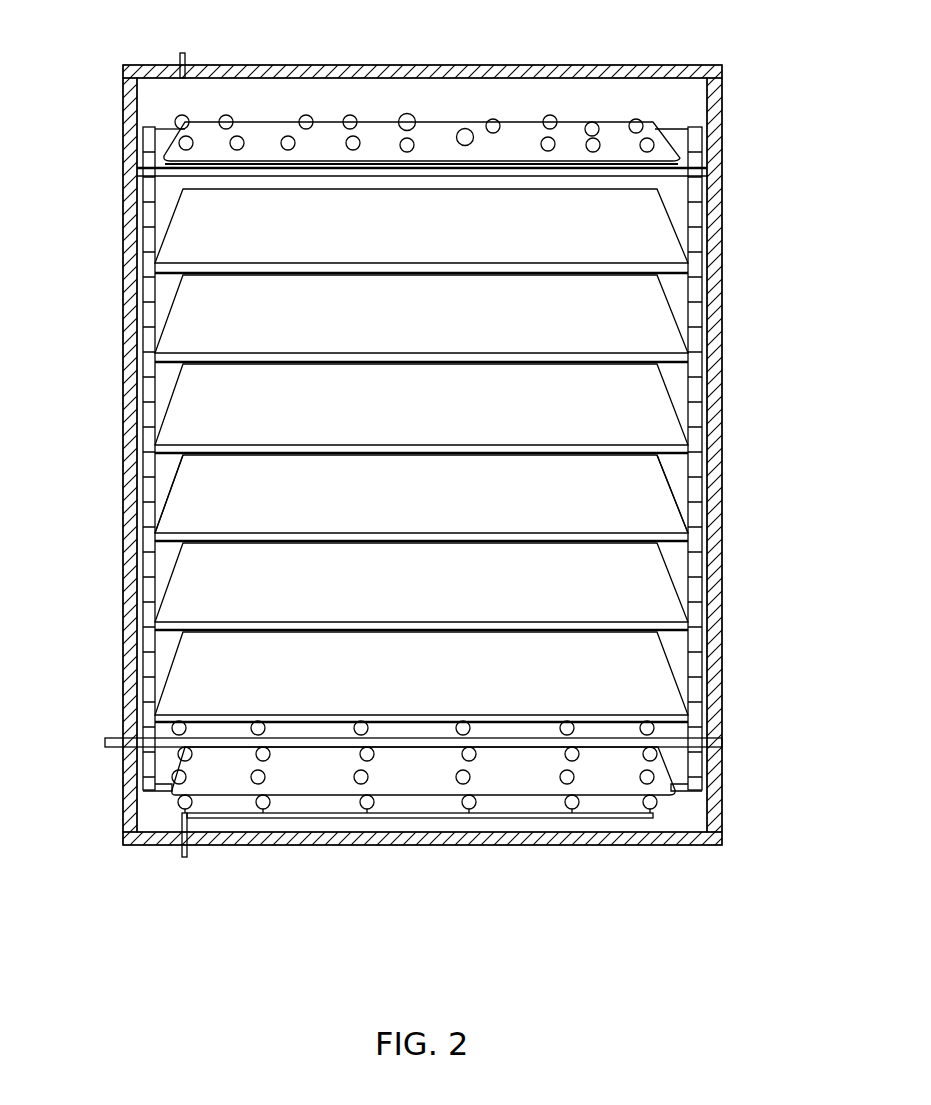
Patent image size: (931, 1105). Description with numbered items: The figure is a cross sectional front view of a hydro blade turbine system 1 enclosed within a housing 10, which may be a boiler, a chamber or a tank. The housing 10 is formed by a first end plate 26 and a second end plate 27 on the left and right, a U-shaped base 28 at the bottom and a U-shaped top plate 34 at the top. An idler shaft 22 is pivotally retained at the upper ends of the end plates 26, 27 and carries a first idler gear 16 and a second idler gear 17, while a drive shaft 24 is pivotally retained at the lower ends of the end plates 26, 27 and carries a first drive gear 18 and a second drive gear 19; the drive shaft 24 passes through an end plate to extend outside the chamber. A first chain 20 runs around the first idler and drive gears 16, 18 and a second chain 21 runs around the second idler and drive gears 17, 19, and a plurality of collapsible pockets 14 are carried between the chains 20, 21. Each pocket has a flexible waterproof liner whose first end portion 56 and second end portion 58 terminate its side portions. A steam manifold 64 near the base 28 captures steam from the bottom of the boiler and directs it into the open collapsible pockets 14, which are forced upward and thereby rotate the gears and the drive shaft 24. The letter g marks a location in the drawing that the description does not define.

The hydro blade turbine system 1 is at (586, 870).
The housing 10 is at (124, 478).
The collapsible pockets 14 is at (655, 317).
The first idler gear 16 is at (143, 144).
The second idler gear 17 is at (697, 147).
The first drive gear 18 is at (145, 772).
The second drive gear 19 is at (705, 757).
The first chain 20 is at (147, 592).
The second chain 21 is at (700, 493).
The idler shaft 22 is at (712, 187).
The drive shaft 24 is at (118, 736).
The first end plate 26 is at (124, 320).
The second end plate 27 is at (717, 398).
The U-shaped base 28 is at (287, 845).
The U-shaped top plate 34 is at (480, 65).
The first end portion 56 is at (165, 507).
The second end portion 58 is at (668, 478).
The steam manifold 64 is at (228, 818).
The gap g is at (784, 702).